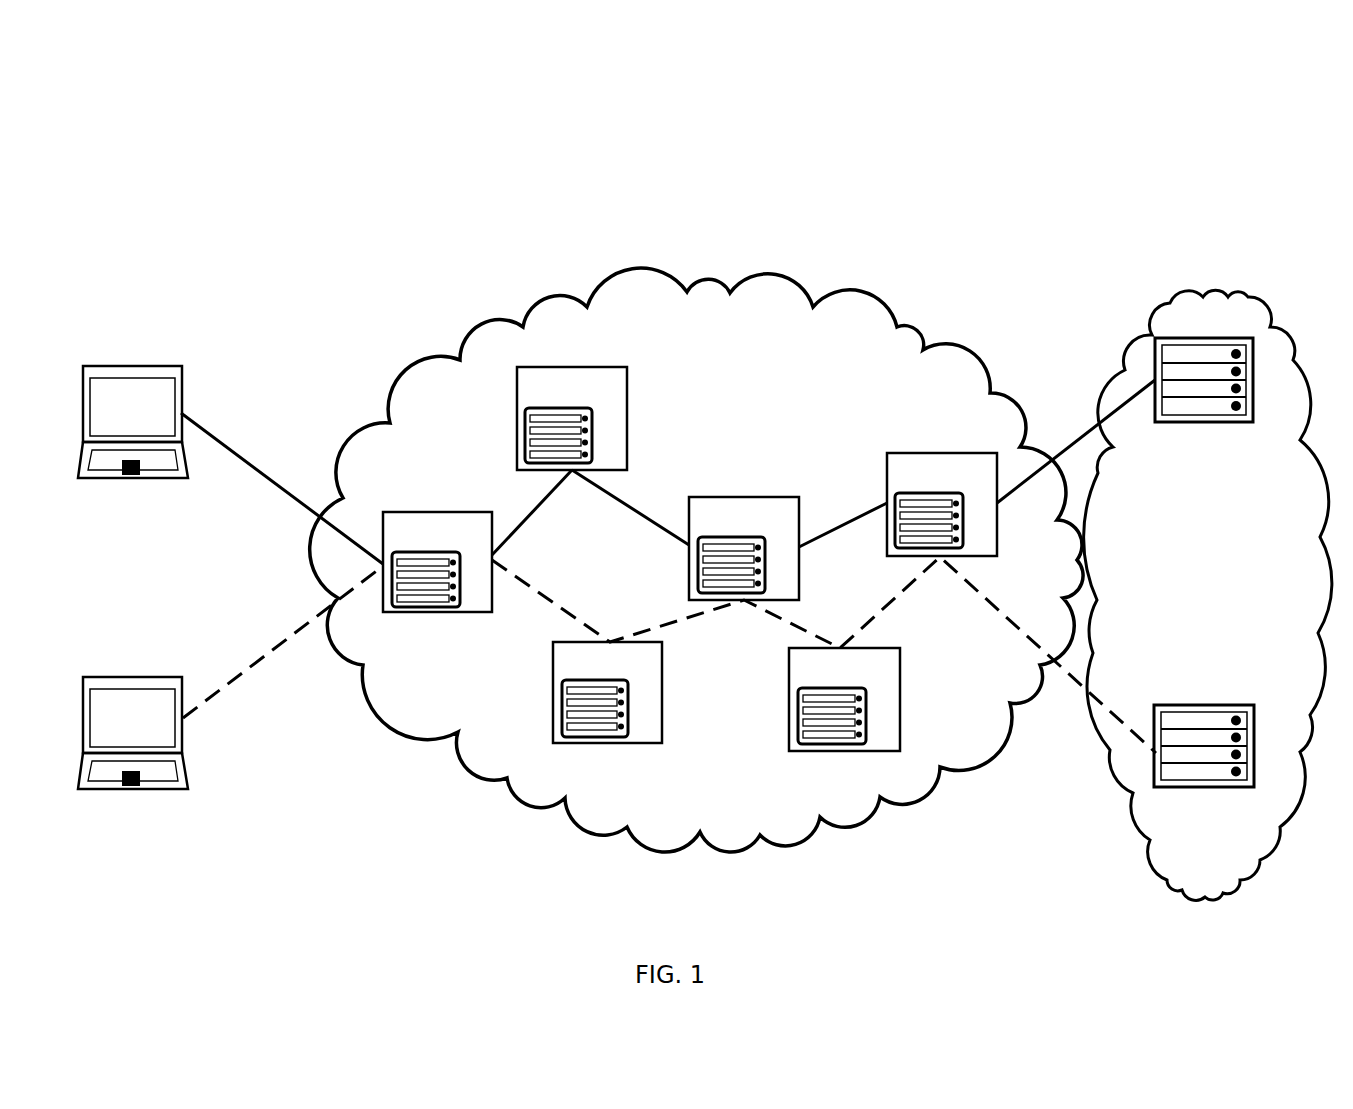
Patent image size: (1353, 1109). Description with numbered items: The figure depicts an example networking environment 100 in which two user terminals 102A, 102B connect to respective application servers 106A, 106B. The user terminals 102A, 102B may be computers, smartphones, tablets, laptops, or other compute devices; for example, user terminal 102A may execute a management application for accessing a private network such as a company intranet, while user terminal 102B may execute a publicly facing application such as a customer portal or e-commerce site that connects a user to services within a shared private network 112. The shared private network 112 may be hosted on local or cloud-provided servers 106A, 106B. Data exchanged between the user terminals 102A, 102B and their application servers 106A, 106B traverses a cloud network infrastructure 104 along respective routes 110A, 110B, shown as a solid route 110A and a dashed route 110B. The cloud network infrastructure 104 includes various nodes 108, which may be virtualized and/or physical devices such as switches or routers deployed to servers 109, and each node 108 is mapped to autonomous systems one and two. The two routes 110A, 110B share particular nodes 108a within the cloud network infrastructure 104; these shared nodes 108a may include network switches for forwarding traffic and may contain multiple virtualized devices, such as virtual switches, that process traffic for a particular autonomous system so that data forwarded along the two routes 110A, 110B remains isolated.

The networking environment 100 is at (1222, 122).
The user terminal 102A is at (183, 380).
The user terminal 102B is at (187, 682).
The cloud network infrastructure 104 is at (686, 352).
The application server 106A is at (1253, 338).
The application server 106B is at (1235, 705).
The node 108 is at (613, 401).
The shared node 108a is at (489, 548).
The server 109 is at (513, 457).
The route 110A is at (233, 457).
The route 110B is at (290, 628).
The shared private network 112 is at (1188, 590).